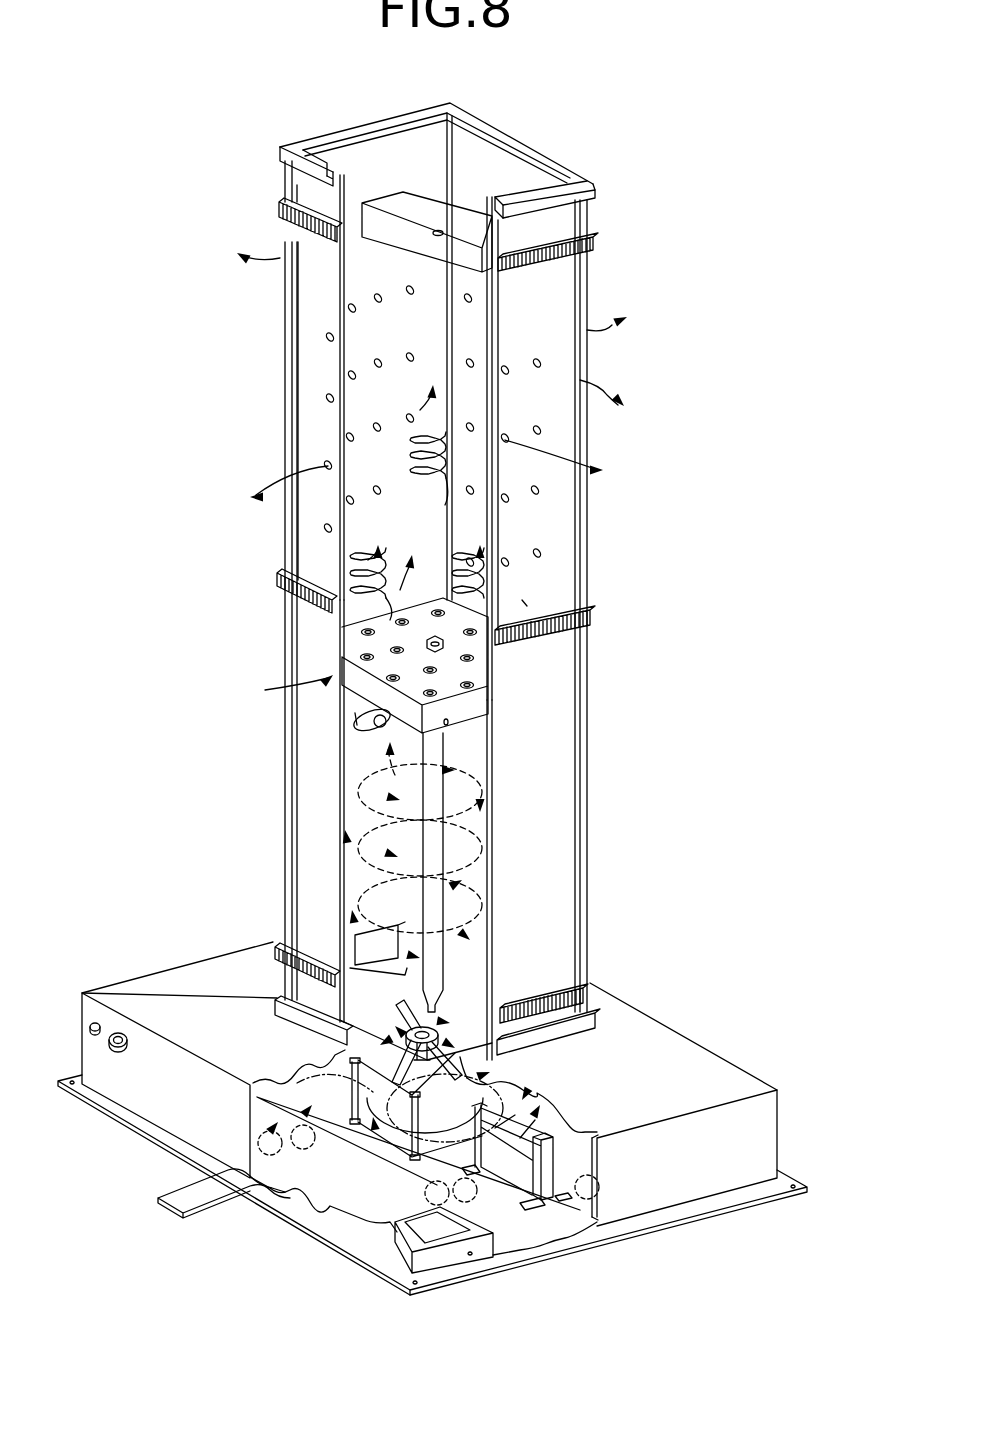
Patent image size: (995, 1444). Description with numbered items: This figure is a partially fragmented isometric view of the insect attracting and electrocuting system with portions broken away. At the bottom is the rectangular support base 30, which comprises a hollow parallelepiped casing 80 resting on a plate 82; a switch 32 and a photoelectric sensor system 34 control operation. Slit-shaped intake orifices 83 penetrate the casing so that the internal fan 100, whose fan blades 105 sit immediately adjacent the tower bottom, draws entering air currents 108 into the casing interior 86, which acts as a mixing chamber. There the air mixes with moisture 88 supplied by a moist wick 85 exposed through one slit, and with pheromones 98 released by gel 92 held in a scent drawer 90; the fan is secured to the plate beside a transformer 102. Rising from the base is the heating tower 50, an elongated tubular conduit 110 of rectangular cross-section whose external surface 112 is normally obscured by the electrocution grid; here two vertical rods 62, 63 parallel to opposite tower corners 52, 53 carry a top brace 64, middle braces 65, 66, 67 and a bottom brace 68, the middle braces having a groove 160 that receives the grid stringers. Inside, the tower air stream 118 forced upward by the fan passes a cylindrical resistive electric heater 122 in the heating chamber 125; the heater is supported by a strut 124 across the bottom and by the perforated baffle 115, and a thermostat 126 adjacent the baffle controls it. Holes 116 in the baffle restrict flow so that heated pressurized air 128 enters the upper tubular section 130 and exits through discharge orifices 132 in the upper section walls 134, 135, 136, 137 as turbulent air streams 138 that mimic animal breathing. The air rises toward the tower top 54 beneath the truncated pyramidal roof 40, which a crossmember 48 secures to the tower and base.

The rectangular support base 30 is at (738, 1032).
The switch 32 is at (92, 1027).
The photoelectric sensor system 34 is at (117, 1047).
The truncated pyramidal roof 40 is at (568, 150).
The crossmember 48 is at (413, 208).
The heating tower 50 is at (335, 152).
The tower corner 52 is at (578, 217).
The tower corner 53 is at (290, 183).
The tower top 54 is at (347, 127).
The rod 62 is at (588, 208).
The rod 63 is at (287, 172).
The top brace 64 is at (283, 168).
The middle brace 65 is at (282, 204).
The middle brace 66 is at (278, 576).
The middle brace 67 is at (275, 950).
The bottom brace 68 is at (277, 1000).
The casing 80 is at (760, 1113).
The plate 82 is at (167, 1137).
The intake orifices 83 is at (240, 1170).
The moist wick 85 is at (227, 1218).
The casing interior 86 is at (350, 1233).
The moisture 88 is at (267, 1118).
The scent drawer 90 is at (508, 1263).
The gel 92 is at (427, 1243).
The pheromones 98 is at (395, 1245).
The internal fan 100 is at (333, 1063).
The transformer 102 is at (537, 1098).
The fan blades 105 is at (415, 1128).
The entering air currents 108 is at (600, 1160).
The tubular conduit 110 is at (566, 723).
The external surface 112 is at (313, 736).
The perforated baffle 115 is at (276, 689).
The holes 116 is at (365, 650).
The tower air stream 118 is at (492, 915).
The resistive electric heater 122 is at (440, 752).
The strut 124 is at (368, 942).
The heating chamber 125 is at (348, 794).
The thermostat 126 is at (360, 722).
The heated pressurized air 128 is at (372, 560).
The upper tubular section 130 is at (325, 310).
The discharge orifices 132 is at (348, 500).
The upper section wall 134 is at (388, 148).
The upper section wall 135 is at (488, 148).
The upper section wall 136 is at (500, 342).
The upper section wall 137 is at (352, 354).
The air streams 138 is at (328, 338).
The groove 160 is at (525, 600).